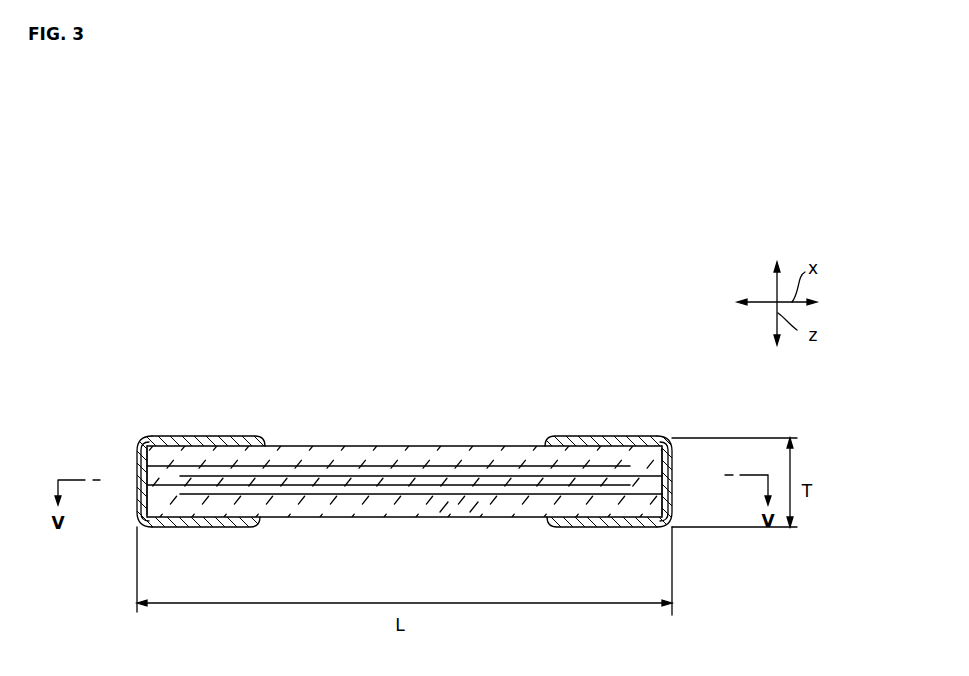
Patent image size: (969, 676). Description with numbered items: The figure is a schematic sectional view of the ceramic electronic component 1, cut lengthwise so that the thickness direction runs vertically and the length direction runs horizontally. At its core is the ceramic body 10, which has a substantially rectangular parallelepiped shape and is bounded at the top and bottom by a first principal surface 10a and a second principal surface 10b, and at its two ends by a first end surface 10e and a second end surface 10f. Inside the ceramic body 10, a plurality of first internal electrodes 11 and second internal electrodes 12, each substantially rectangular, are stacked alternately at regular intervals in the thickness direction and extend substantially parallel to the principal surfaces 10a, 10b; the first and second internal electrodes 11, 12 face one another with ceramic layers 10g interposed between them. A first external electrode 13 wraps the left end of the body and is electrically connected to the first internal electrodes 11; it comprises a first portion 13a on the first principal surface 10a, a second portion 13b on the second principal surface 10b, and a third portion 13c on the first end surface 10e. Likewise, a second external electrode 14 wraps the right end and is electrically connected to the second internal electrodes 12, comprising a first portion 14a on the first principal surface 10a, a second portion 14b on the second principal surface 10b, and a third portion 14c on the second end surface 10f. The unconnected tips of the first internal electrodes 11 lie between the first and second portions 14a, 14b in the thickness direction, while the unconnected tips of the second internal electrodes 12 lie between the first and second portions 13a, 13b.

The ceramic electronic component 1 is at (565, 390).
The ceramic body 10 is at (457, 447).
The first principal surface 10a is at (386, 446).
The second principal surface 10b is at (407, 517).
The first end surface 10e is at (137, 497).
The second end surface 10f is at (672, 505).
The ceramic layers 10g is at (455, 493).
The first internal electrodes 11 is at (313, 465).
The second internal electrodes 12 is at (310, 494).
The first external electrode 13 is at (132, 471).
The first portion of first external electrode 13a is at (218, 436).
The second portion of first external electrode 13b is at (197, 527).
The third portion of first external electrode 13c is at (130, 462).
The second external electrode 14 is at (668, 447).
The first portion of second external electrode 14a is at (616, 437).
The second portion of second external electrode 14b is at (612, 527).
The third portion of second external electrode 14c is at (672, 470).